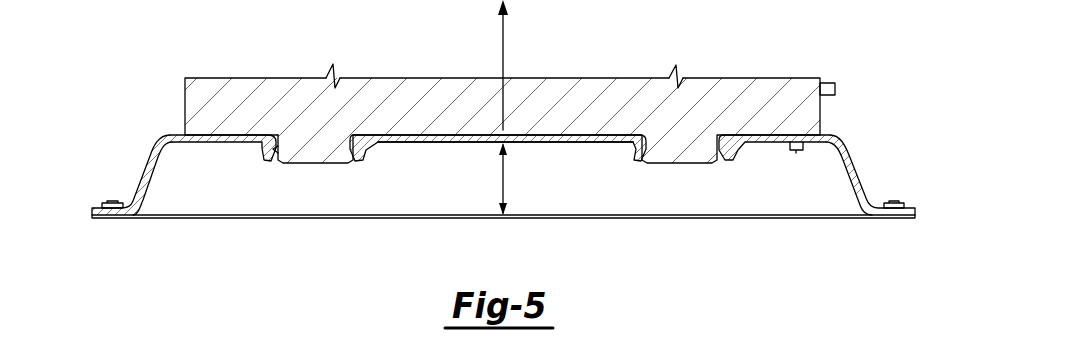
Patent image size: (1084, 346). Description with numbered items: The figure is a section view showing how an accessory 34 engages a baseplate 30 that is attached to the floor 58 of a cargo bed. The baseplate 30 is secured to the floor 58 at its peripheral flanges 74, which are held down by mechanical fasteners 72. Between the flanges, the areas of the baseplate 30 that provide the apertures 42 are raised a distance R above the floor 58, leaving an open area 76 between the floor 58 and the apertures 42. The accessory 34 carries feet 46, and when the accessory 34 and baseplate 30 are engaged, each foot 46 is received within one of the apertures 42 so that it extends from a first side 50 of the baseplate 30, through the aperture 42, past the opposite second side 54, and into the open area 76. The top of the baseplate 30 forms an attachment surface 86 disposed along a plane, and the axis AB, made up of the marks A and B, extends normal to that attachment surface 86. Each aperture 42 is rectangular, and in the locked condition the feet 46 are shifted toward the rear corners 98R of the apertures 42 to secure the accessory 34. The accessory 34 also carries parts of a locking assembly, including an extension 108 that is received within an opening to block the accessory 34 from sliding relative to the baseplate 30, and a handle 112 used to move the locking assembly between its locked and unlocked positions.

The baseplate 30 is at (502, 134).
The accessory 34 is at (507, 109).
The aperture 42 is at (277, 148).
The foot 46 is at (330, 163).
The first side 50 is at (512, 144).
The second side 54 is at (418, 143).
The floor 58 is at (190, 216).
The mechanical fastener 72 is at (112, 201).
The peripheral flange 74 is at (132, 206).
The open area 76 is at (824, 173).
The attachment surface 86 is at (505, 118).
The rear corner 98R is at (282, 148).
The extension 108 is at (796, 154).
The handle 112 is at (830, 82).
The axis A is at (493, 53).
The axis B is at (553, 14).
The distance R is at (505, 178).